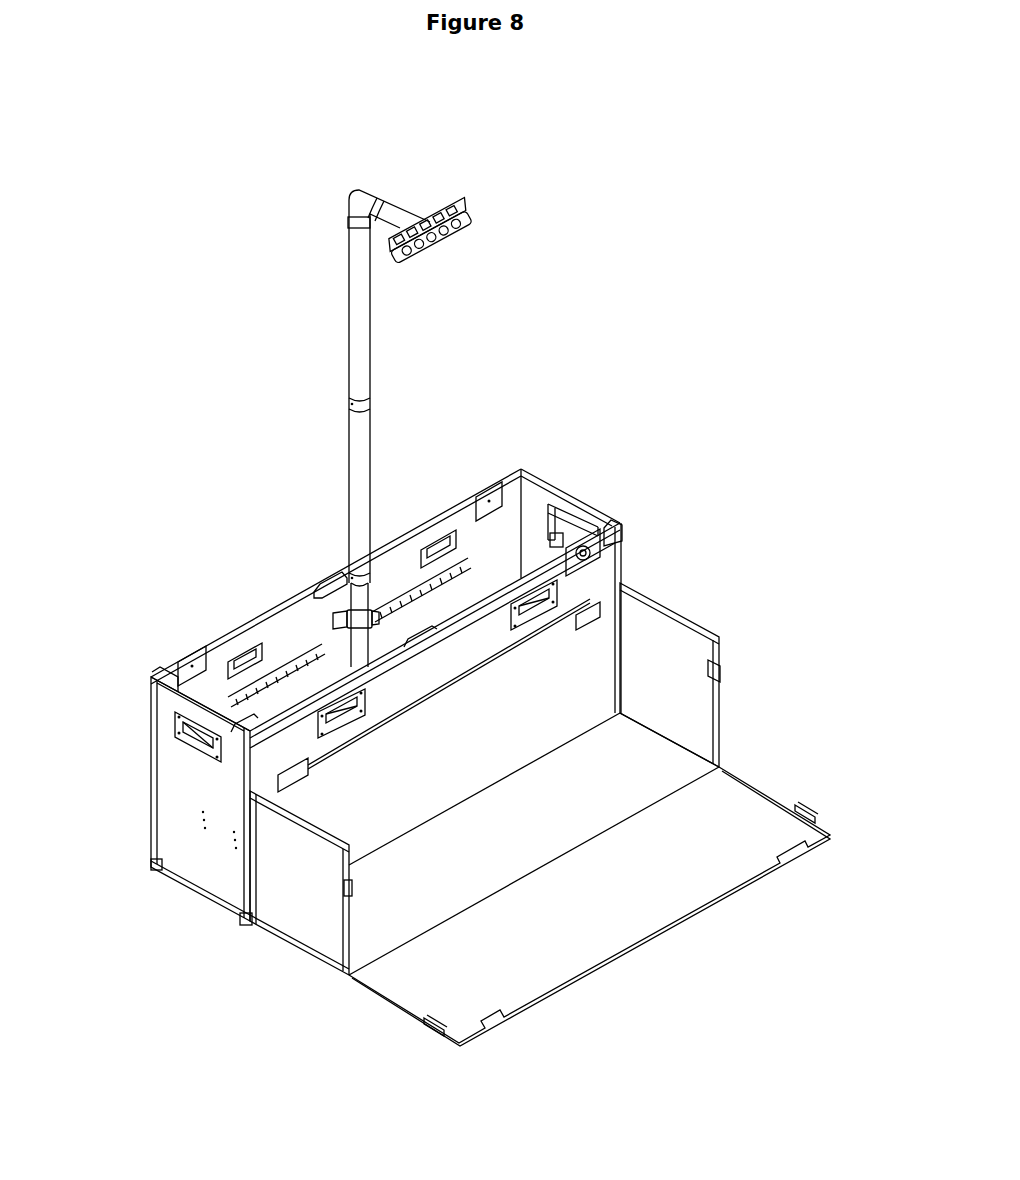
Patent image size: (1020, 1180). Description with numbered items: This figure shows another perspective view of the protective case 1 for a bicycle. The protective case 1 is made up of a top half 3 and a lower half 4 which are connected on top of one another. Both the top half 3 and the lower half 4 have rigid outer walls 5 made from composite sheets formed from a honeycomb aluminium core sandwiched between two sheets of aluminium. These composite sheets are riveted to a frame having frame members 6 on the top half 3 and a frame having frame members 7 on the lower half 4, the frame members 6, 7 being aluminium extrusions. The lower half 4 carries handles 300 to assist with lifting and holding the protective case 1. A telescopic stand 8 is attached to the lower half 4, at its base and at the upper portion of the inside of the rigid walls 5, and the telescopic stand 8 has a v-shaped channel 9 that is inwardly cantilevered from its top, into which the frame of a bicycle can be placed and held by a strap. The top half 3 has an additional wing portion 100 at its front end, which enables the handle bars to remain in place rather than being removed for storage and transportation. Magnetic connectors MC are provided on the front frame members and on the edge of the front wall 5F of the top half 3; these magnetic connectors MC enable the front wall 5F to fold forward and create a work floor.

The protective case 1 is at (596, 469).
The top half 3 is at (718, 606).
The lower half 4 is at (124, 741).
The rigid outer walls 5 is at (543, 552).
The front wall 5F is at (626, 899).
The frame members 6 is at (347, 950).
The frame members 7 is at (148, 808).
The telescopic stand 8 is at (366, 452).
The v-shaped channel 9 is at (440, 237).
The wing portion 100 is at (484, 485).
The handles 300 is at (363, 705).
The magnetic connectors MC is at (722, 676).